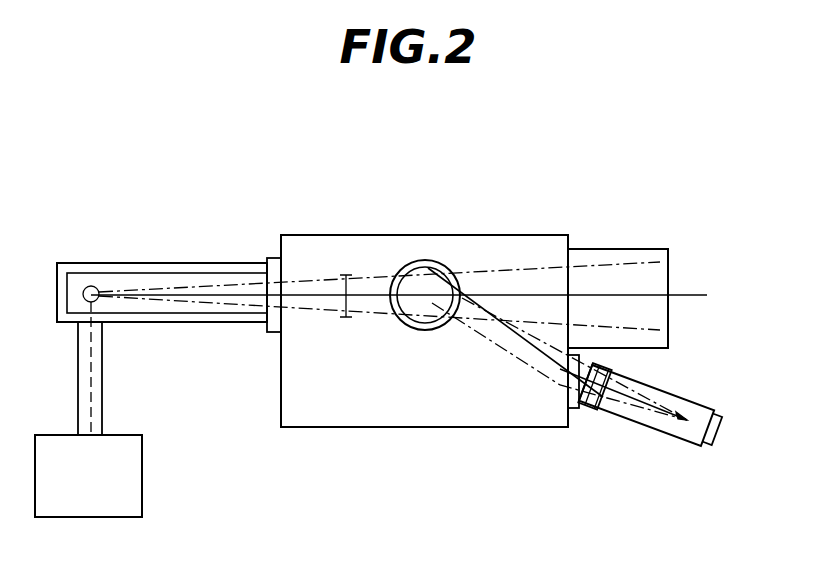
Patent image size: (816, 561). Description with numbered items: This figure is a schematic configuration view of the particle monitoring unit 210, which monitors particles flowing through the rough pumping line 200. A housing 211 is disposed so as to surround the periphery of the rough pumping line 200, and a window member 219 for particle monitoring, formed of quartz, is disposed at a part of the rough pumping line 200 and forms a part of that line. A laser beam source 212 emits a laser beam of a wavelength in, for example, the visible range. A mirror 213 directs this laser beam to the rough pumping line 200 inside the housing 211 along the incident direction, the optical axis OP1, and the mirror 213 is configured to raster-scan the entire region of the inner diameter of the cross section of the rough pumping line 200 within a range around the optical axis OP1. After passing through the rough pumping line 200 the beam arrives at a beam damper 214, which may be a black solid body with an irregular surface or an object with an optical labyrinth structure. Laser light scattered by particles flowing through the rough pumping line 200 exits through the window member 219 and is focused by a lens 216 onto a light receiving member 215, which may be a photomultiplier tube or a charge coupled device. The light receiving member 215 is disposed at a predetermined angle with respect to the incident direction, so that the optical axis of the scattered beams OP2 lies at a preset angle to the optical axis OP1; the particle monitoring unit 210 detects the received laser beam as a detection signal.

The rough pumping line 200 is at (445, 252).
The particle monitoring unit 210 is at (620, 210).
The housing 211 is at (423, 428).
The laser beam source 212 is at (142, 472).
The mirror 213 is at (88, 286).
The beam damper 214 is at (670, 282).
The light receiving member 215 is at (683, 393).
The lens 216 is at (605, 393).
The window member 219 is at (393, 266).
The optical axis OP1 is at (707, 296).
The optical axis of scattered beams OP2 is at (738, 433).